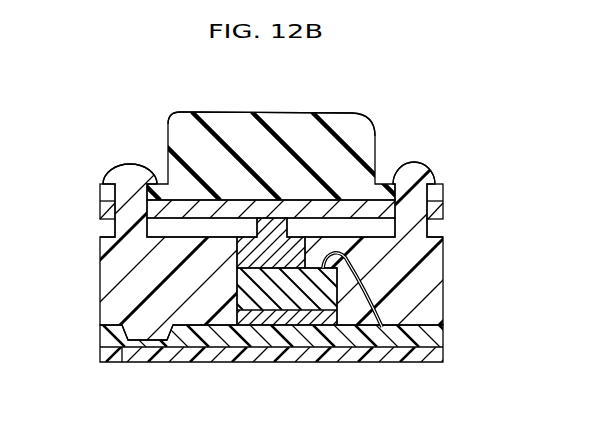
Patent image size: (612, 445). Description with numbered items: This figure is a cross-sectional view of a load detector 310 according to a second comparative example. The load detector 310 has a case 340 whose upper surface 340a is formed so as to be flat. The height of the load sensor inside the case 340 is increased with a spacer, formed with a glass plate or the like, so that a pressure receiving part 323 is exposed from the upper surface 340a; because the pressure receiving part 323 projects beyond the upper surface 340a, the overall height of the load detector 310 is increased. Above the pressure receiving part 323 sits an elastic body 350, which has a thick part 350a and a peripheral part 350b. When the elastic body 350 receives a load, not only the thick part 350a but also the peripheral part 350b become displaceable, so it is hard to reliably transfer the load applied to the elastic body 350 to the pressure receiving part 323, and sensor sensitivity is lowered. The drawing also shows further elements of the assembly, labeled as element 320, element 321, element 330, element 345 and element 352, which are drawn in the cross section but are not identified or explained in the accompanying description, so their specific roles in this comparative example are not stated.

The load detector 310 is at (476, 150).
The light emitting unit 320 is at (285, 324).
The light emitting element 321 is at (278, 255).
The pressure receiving part 323 is at (271, 222).
The bonding wire 330 is at (309, 296).
The case 340 is at (420, 280).
The upper surface 340a is at (101, 233).
The lens holding portion 345 is at (130, 171).
The elastic body 350 is at (236, 118).
The thick part 350a is at (271, 105).
The peripheral part 350b is at (444, 190).
The adhesive layer 352 is at (180, 214).